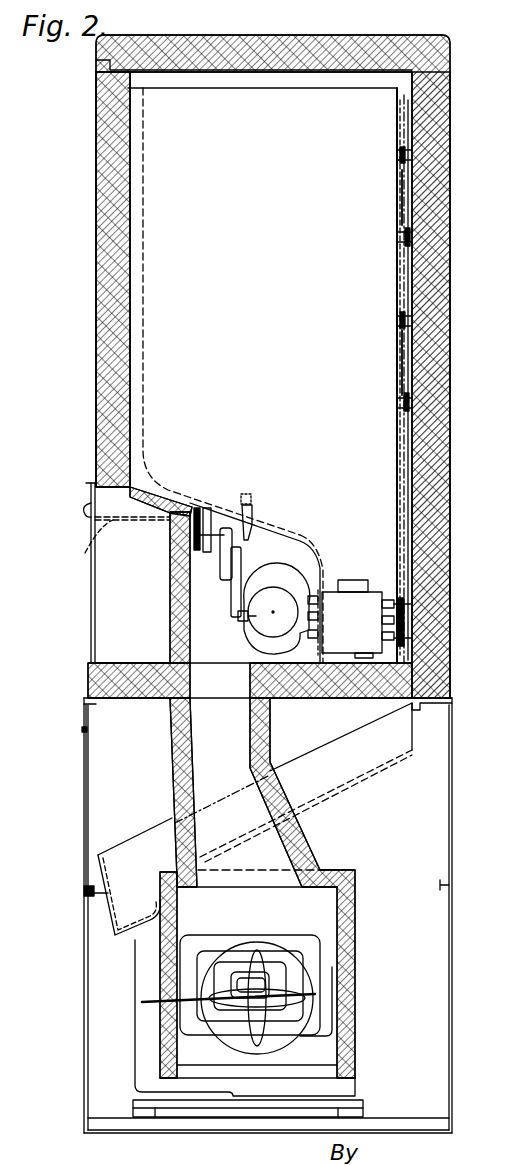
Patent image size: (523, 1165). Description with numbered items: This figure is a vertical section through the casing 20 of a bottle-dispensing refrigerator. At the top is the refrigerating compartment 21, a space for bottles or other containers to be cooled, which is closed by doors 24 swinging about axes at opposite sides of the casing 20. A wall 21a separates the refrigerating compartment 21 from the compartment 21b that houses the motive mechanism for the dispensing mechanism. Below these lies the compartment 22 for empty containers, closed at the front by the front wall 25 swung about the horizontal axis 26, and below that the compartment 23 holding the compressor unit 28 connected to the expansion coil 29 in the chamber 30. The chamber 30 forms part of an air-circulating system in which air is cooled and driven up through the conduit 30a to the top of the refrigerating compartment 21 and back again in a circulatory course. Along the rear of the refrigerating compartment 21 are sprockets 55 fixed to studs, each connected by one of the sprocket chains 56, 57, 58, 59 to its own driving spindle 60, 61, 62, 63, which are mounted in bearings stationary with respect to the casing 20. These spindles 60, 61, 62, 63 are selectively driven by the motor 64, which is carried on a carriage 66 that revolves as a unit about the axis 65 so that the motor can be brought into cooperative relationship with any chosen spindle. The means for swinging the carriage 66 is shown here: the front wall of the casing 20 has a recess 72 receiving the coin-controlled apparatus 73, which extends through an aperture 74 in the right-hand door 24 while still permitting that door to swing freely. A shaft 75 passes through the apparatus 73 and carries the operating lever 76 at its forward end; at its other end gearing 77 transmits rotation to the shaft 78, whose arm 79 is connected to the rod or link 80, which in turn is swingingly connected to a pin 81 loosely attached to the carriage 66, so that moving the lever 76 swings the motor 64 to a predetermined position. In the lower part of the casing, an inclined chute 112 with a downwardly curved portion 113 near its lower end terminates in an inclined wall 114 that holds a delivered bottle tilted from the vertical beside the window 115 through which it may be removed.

The casing 20 is at (436, 399).
The refrigerating compartment 21 is at (362, 484).
The wall 21a is at (226, 512).
The compartment 21b is at (284, 540).
The compartment 22 is at (104, 766).
The compartment 23 is at (442, 846).
The door 24 is at (104, 324).
The front wall 25 is at (82, 729).
The horizontal axis 26 is at (84, 896).
The compressor unit 28 is at (136, 1029).
The expansion coil 29 is at (258, 940).
The chamber 30 is at (345, 912).
The conduit 30a is at (252, 742).
The sprocket 55 is at (412, 232).
The sprocket chain 56 is at (400, 203).
The sprocket chain 57 is at (409, 272).
The sprocket chain 58 is at (400, 418).
The sprocket chain 59 is at (416, 516).
The spindle 60 is at (406, 606).
The spindle 61 is at (380, 604).
The spindle 62 is at (410, 636).
The spindle 63 is at (380, 636).
The motor 64 is at (277, 590).
The axis 65 is at (345, 605).
The carriage 66 is at (322, 588).
The recess 72 is at (97, 660).
The coin-controlled apparatus 73 is at (150, 516).
The aperture 74 is at (98, 486).
The shaft 75 is at (88, 548).
The operating lever 76 is at (84, 510).
The gearing 77 is at (198, 556).
The shaft 78 is at (222, 560).
The arm 79 is at (250, 527).
The rod or link 80 is at (242, 578).
The pin 81 is at (238, 617).
The inclined chute 112 is at (328, 792).
The downwardly curved portion 113 is at (162, 900).
The inclined wall 114 is at (108, 922).
The window 115 is at (84, 823).